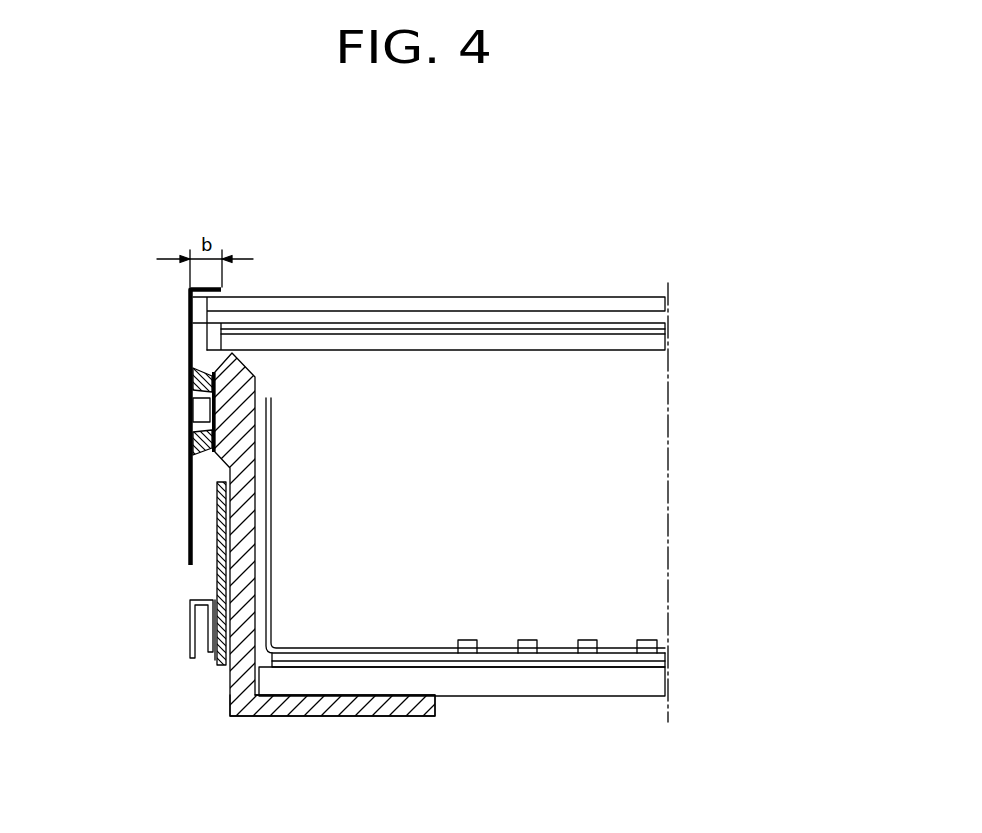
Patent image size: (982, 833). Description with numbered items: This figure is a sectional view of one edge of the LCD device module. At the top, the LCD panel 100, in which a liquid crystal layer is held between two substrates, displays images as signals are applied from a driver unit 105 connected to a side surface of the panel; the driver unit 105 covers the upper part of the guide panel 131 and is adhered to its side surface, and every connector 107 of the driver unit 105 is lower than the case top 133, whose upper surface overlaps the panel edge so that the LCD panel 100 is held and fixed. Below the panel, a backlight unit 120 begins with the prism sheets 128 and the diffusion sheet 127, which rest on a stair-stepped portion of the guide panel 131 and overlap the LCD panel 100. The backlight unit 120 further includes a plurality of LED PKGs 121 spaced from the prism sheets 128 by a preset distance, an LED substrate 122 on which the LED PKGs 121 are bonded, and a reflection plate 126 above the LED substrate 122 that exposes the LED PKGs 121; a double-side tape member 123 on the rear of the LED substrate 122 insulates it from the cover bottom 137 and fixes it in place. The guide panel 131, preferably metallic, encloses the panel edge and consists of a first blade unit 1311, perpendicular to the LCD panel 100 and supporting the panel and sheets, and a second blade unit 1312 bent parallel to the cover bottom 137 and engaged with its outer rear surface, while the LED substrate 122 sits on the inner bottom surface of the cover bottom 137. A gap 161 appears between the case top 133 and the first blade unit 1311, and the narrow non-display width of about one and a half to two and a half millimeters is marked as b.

The LCD panel 100 is at (539, 305).
The driver unit 105 is at (217, 570).
The connector 107 is at (190, 622).
The backlight unit 120 is at (429, 498).
The LED PKG 121 is at (523, 653).
The LED substrate 122 is at (558, 661).
The double-side tape member 123 is at (598, 667).
The reflection plate 126 is at (272, 600).
The diffusion sheet 127 is at (375, 343).
The prism sheets 128 is at (429, 332).
The guide panel 131 is at (237, 560).
The first blade unit 1311 is at (237, 681).
The second blade unit 1312 is at (270, 708).
The case top 133 is at (188, 330).
The cover bottom 137 is at (452, 682).
The gap 161 is at (186, 405).